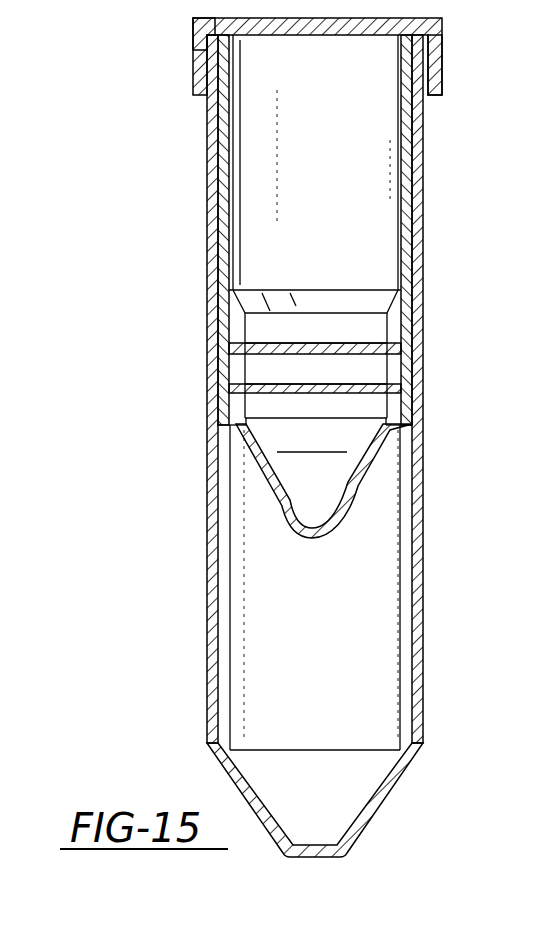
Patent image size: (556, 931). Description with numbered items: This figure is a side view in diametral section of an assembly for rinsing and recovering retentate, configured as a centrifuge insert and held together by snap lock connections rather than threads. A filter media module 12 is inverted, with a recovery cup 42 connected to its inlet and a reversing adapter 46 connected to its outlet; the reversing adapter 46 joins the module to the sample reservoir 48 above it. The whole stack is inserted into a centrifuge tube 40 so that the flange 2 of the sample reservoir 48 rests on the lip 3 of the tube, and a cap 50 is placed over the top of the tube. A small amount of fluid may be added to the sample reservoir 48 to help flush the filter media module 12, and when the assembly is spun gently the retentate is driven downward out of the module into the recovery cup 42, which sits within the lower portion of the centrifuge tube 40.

The flange 2 is at (440, 33).
The lip 3 is at (195, 24).
The cap 50 is at (442, 75).
The sample reservoir 48 is at (423, 182).
The reversing adapter 46 is at (413, 332).
The filter media module 12 is at (413, 393).
The centrifuge tube 40 is at (364, 446).
The recovery cup 42 is at (350, 506).